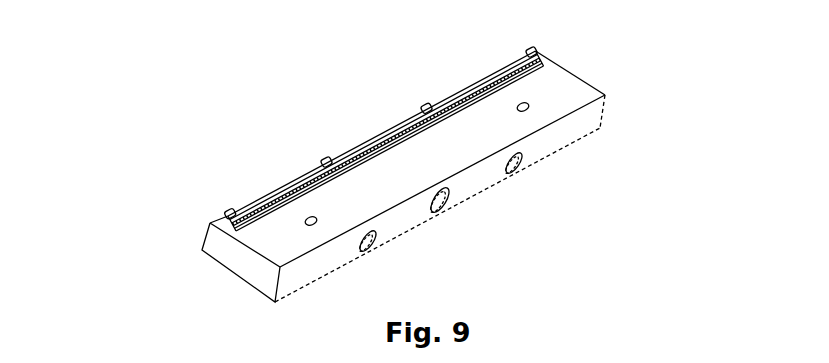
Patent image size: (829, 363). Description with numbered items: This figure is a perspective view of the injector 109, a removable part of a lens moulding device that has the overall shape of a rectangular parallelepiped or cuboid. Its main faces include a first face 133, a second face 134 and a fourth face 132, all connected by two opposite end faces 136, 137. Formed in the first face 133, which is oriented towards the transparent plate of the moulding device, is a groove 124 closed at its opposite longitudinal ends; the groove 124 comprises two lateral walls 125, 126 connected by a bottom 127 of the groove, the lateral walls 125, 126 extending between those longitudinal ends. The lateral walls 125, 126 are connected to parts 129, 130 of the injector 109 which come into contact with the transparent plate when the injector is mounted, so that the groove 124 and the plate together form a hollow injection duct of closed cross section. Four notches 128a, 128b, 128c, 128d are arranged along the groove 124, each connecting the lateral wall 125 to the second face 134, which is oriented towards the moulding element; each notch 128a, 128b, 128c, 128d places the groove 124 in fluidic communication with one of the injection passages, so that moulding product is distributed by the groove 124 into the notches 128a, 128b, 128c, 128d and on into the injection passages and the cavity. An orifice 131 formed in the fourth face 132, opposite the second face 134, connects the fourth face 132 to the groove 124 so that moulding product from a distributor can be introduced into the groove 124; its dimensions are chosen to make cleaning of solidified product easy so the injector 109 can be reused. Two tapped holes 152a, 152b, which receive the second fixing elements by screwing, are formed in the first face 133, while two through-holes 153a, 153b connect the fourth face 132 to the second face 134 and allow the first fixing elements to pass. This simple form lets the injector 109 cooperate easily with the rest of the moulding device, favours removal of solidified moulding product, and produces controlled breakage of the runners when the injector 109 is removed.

The injector 109 is at (150, 147).
The groove 124 is at (388, 168).
The lateral wall 125 is at (317, 183).
The lateral wall 126 is at (393, 140).
The bottom of the groove 127 is at (468, 100).
The notch 128a is at (227, 222).
The notch 128b is at (327, 167).
The notch 128c is at (425, 112).
The notch 128d is at (528, 60).
The part of the injector 129 is at (285, 185).
The part of the injector 130 is at (287, 207).
The orifice 131 is at (440, 200).
The fourth face 132 is at (483, 185).
The first face 133 is at (572, 98).
The second face 134 is at (398, 118).
The end face 136 is at (212, 257).
The end face 137 is at (612, 85).
The tapped hole 152a is at (312, 226).
The tapped hole 152b is at (527, 108).
The through-hole 153a is at (373, 240).
The through-hole 153b is at (523, 165).